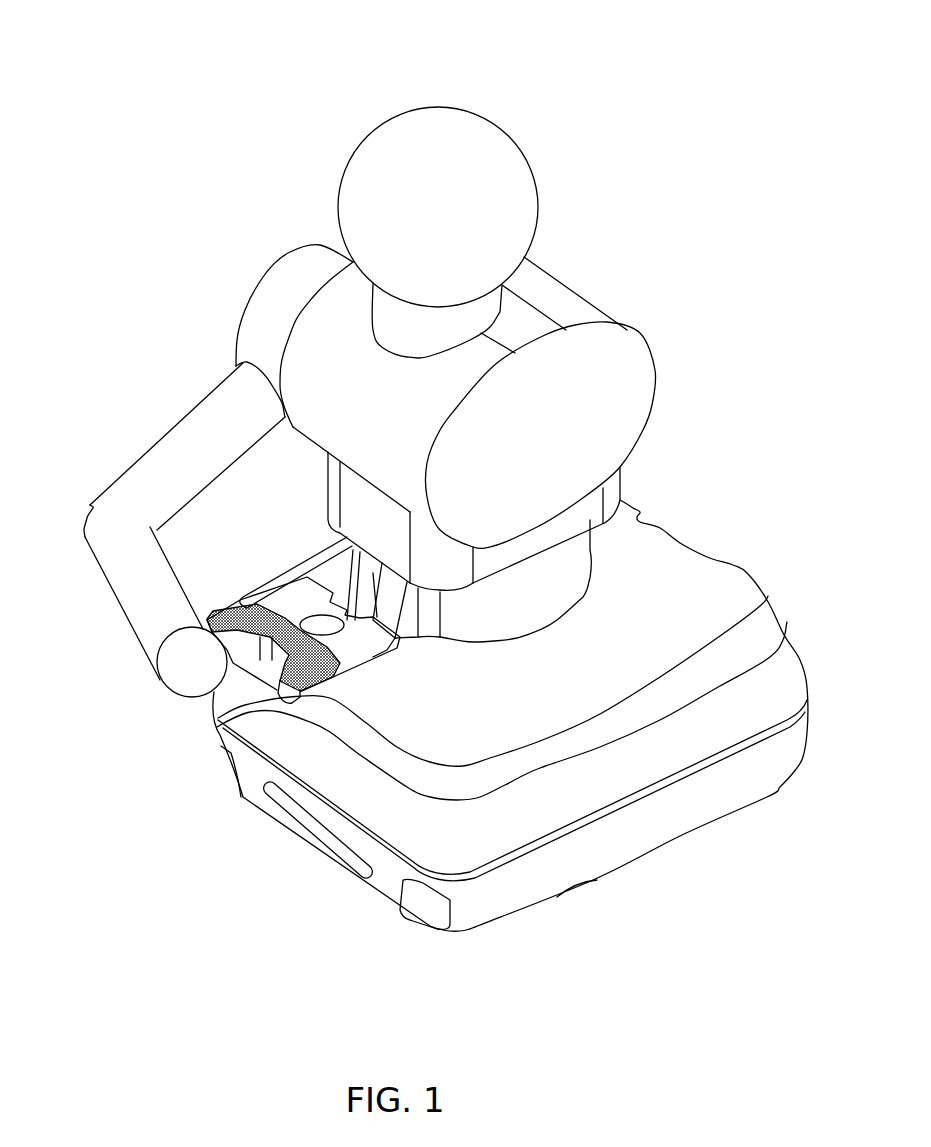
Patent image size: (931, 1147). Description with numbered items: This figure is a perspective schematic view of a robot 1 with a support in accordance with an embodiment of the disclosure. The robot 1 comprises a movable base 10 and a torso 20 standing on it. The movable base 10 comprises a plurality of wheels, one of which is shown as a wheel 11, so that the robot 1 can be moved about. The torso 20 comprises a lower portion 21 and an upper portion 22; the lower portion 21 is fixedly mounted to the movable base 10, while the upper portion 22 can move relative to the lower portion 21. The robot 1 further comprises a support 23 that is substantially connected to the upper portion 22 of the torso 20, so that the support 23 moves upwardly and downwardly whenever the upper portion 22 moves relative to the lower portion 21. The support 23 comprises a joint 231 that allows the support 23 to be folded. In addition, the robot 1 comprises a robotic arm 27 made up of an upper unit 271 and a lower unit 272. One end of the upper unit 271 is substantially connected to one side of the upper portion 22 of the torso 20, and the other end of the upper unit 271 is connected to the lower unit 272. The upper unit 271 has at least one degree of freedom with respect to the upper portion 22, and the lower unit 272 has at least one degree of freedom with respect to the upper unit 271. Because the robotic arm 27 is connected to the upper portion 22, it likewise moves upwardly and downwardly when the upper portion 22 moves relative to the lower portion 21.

The robot 1 is at (713, 147).
The movable base 10 is at (743, 782).
The wheel 11 is at (587, 888).
The torso 20 is at (693, 363).
The lower portion 21 is at (557, 575).
The upper portion 22 is at (588, 312).
The support 23 is at (283, 700).
The joint 231 is at (255, 706).
The robotic arm 27 is at (177, 397).
The upper unit 271 is at (142, 470).
The lower unit 272 is at (148, 612).